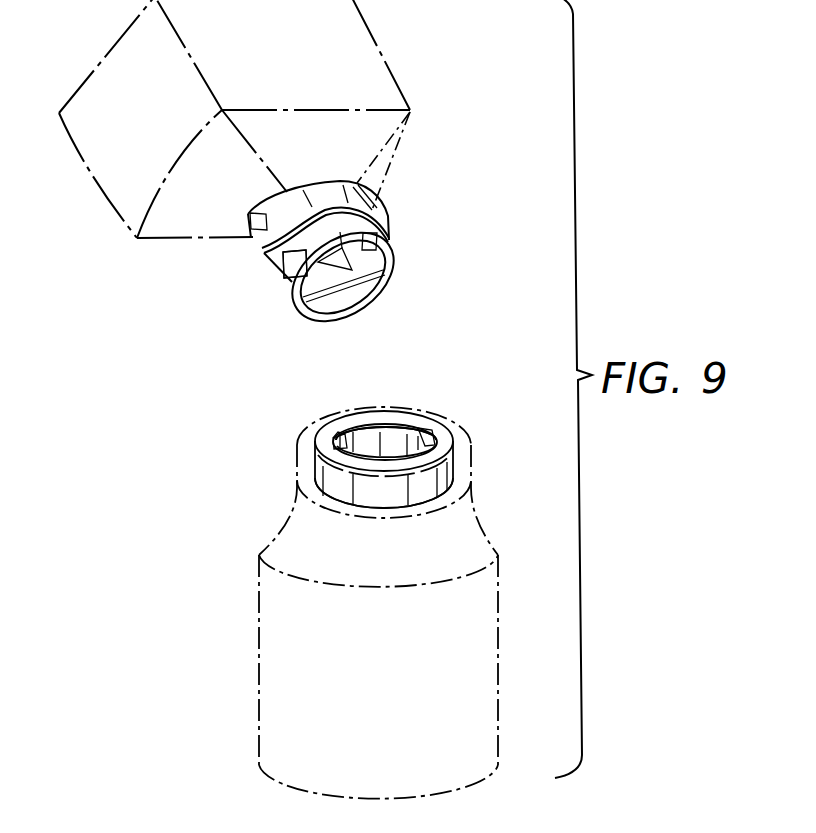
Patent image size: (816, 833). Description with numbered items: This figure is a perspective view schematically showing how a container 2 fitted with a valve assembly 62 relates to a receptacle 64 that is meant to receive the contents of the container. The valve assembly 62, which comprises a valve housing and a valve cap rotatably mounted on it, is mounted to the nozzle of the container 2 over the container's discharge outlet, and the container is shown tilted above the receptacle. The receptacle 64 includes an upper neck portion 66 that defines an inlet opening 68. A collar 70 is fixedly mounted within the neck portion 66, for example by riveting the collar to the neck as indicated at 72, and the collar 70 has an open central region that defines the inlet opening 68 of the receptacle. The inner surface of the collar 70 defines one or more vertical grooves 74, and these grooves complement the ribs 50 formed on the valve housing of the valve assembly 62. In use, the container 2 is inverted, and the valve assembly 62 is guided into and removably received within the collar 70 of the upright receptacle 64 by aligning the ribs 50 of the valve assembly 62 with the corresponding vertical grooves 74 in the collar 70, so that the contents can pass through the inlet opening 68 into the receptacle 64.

The container 2 is at (408, 90).
The valve assembly 62 is at (412, 252).
The ribs 50 is at (280, 262).
The receptacle 64 is at (258, 572).
The upper neck portion 66 is at (467, 460).
The riveting 72 is at (463, 495).
The collar 70 is at (365, 438).
The inlet opening 68 is at (367, 425).
The vertical grooves 74 is at (425, 430).